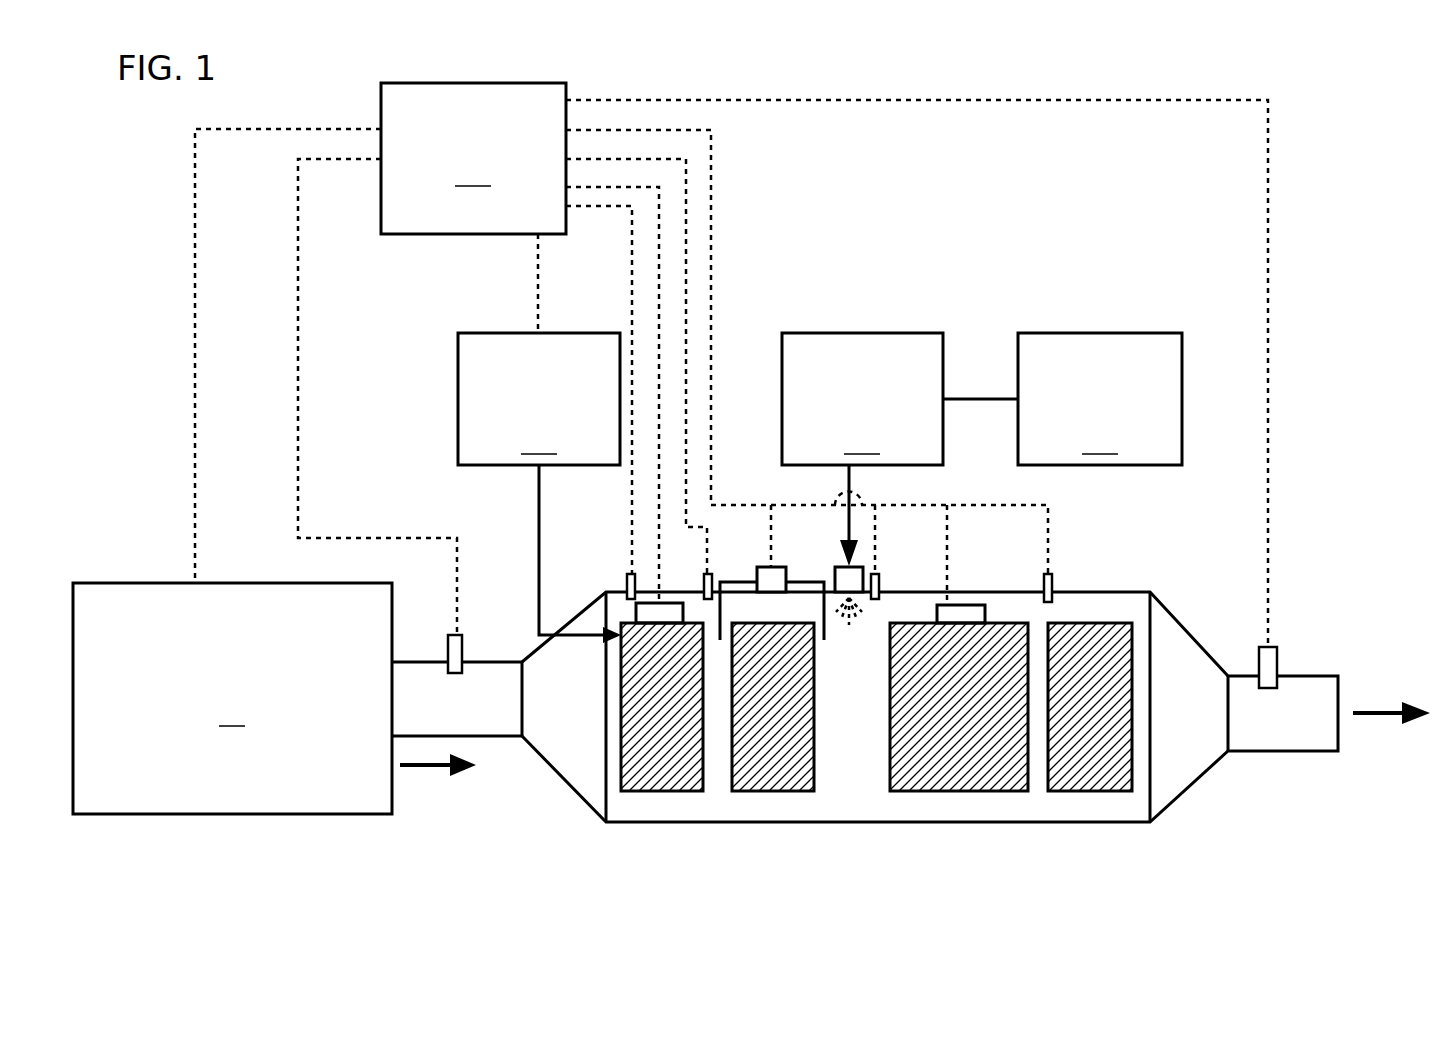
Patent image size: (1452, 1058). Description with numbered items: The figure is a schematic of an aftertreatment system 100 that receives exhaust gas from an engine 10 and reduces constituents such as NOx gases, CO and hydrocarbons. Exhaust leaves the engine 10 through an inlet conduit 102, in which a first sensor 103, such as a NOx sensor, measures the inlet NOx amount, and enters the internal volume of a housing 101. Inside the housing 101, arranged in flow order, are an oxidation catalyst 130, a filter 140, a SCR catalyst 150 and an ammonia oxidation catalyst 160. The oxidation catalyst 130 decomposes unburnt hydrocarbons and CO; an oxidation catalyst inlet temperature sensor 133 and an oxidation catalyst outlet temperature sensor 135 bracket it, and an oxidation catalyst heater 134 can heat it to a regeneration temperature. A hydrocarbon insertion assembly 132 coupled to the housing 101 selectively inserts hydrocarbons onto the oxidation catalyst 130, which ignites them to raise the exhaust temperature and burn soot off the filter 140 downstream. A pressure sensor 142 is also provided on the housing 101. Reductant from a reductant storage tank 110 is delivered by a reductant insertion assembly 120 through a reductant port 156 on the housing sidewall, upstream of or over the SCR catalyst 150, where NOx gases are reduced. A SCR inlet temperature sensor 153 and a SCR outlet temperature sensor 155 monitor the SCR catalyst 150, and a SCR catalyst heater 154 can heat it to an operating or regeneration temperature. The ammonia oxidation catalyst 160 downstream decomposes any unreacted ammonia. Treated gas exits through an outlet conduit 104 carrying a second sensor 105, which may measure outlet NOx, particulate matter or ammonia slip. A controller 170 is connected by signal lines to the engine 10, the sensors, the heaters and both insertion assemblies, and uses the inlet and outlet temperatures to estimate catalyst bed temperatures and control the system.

The aftertreatment system 100 is at (1250, 84).
The engine 10 is at (232, 698).
The housing 101 is at (793, 822).
The inlet conduit 102 is at (505, 722).
The first sensor 103 is at (461, 652).
The outlet conduit 104 is at (1300, 742).
The second sensor 105 is at (1271, 662).
The reductant storage tank 110 is at (1062, 399).
The reductant insertion assembly 120 is at (862, 449).
The oxidation catalyst 130 is at (650, 778).
The hydrocarbon insertion assembly 132 is at (539, 488).
The oxidation catalyst inlet temperature sensor 133 is at (627, 580).
The oxidation catalyst heater 134 is at (670, 603).
The oxidation catalyst outlet temperature sensor 135 is at (710, 574).
The filter 140 is at (763, 778).
The pressure sensor 142 is at (772, 567).
The SCR catalyst 150 is at (925, 770).
The SCR inlet temperature sensor 153 is at (880, 574).
The SCR catalyst heater 154 is at (977, 605).
The SCR outlet temperature sensor 155 is at (1050, 576).
The reductant port 156 is at (853, 585).
The ammonia oxidation catalyst 160 is at (1078, 778).
The controller 170 is at (621, 359).